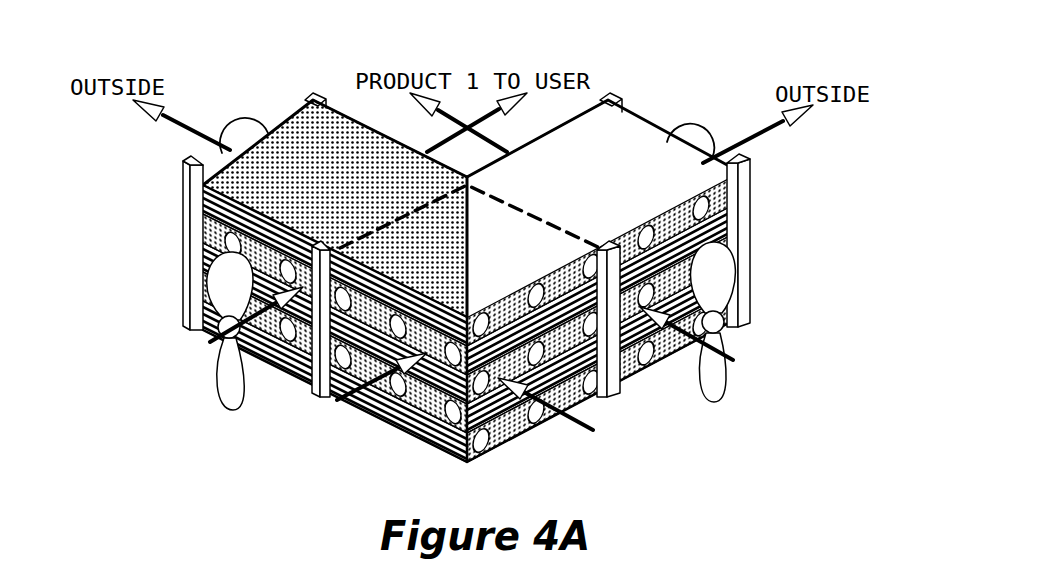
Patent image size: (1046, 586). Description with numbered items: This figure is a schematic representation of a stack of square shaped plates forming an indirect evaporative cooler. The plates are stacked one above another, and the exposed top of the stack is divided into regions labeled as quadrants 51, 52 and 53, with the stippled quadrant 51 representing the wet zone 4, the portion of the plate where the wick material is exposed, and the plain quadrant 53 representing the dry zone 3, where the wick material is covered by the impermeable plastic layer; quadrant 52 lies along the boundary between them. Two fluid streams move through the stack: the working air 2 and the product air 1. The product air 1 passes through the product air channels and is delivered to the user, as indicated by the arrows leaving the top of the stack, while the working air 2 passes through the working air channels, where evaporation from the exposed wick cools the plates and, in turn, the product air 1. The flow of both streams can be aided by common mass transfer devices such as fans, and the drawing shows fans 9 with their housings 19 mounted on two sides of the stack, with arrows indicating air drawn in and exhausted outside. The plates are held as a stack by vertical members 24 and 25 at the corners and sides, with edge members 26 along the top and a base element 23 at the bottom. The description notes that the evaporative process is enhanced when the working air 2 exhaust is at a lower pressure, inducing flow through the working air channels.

The product air 1 is at (210, 343).
The working air 2 is at (347, 405).
The dry zone 3 is at (430, 430).
The wet zone 4 is at (487, 442).
The fan 9 is at (225, 276).
The fan motor 19 is at (233, 138).
The bottom plate 23 is at (527, 433).
The outer support post 24 is at (297, 112).
The inner support post 25 is at (283, 357).
The top cover edge 26 is at (350, 112).
The quadrant 51 is at (335, 208).
The quadrant 52 is at (492, 307).
The quadrant 53 is at (603, 208).